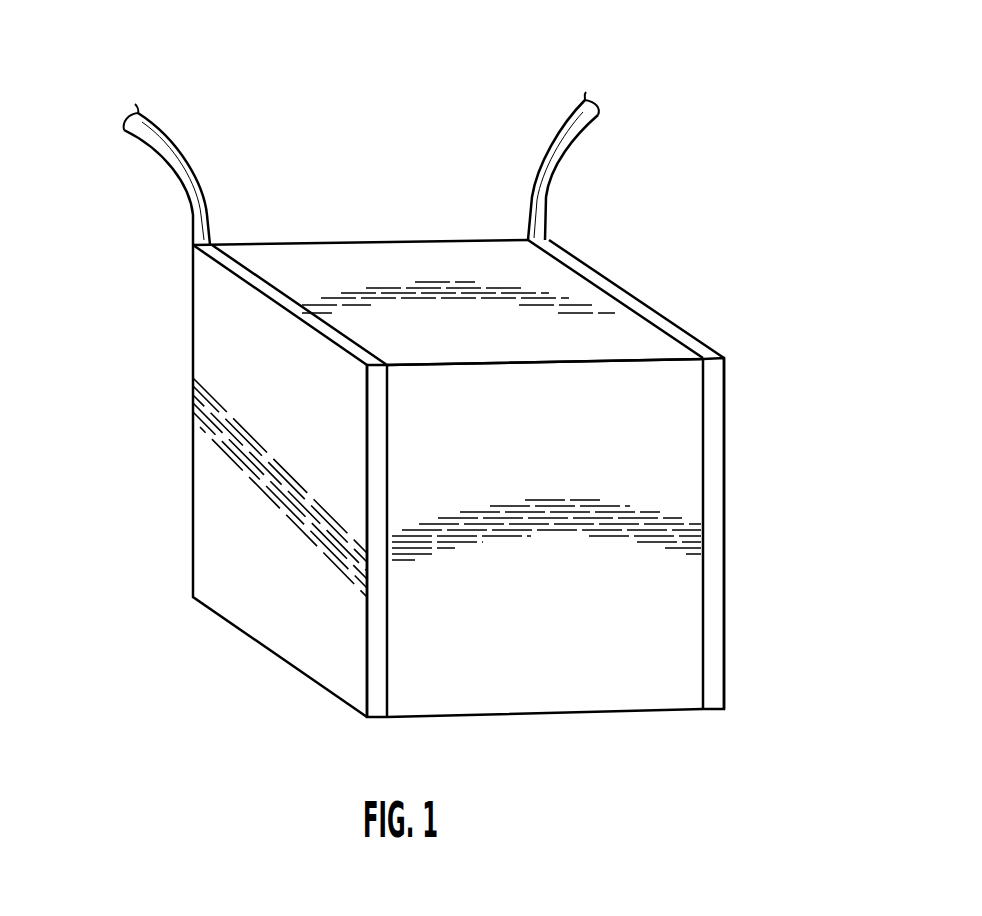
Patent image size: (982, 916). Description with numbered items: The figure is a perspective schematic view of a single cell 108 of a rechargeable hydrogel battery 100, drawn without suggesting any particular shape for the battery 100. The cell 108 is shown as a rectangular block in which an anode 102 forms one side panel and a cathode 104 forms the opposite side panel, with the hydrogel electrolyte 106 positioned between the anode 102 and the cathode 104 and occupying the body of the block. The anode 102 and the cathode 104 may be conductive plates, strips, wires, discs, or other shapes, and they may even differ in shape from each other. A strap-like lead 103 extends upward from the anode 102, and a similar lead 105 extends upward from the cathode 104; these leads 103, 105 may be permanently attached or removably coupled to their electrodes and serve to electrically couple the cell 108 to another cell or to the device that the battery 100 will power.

The rechargeable hydrogel battery 100 is at (712, 65).
The anode 102 is at (253, 597).
The leads 103 is at (162, 155).
The cathode 104 is at (643, 302).
The leads 105 is at (570, 145).
The electrolyte 106 is at (545, 622).
The cell 108 is at (323, 243).